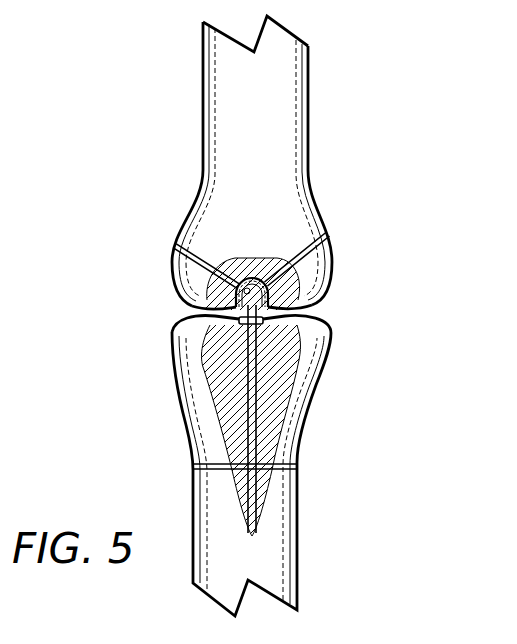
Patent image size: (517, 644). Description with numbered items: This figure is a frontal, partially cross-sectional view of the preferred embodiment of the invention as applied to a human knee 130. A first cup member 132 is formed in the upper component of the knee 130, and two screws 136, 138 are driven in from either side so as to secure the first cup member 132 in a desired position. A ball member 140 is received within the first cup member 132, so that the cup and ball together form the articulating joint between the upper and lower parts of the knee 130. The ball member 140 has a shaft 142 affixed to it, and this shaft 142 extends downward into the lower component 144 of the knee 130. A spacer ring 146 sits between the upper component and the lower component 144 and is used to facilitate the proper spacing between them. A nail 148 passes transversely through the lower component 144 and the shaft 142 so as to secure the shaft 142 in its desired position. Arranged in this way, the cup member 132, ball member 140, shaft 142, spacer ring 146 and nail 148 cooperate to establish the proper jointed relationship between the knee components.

The knee 130 is at (297, 198).
The first cup member 132 is at (266, 282).
The screw 136 is at (323, 238).
The screw 138 is at (192, 265).
The ball member 140 is at (207, 307).
The shaft 142 is at (252, 427).
The lower component 144 is at (318, 368).
The spacer ring 146 is at (267, 315).
The nail 148 is at (298, 465).